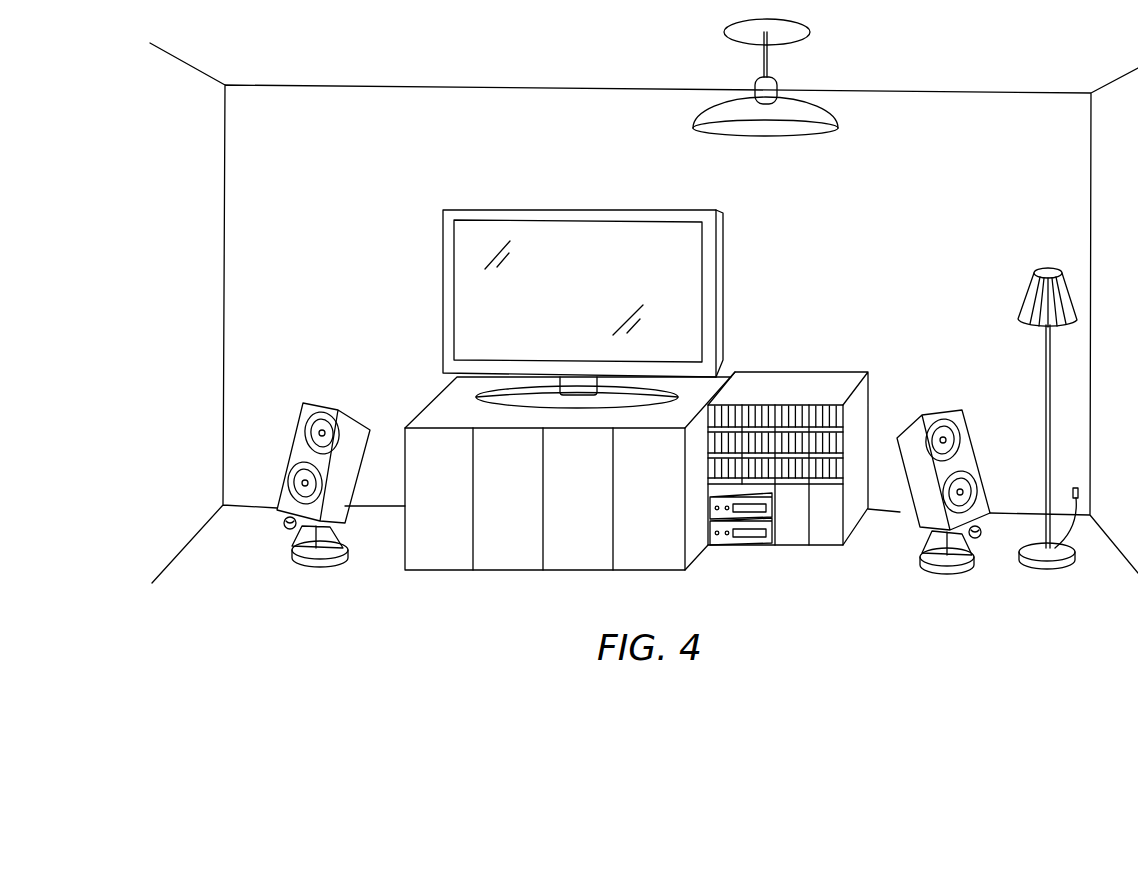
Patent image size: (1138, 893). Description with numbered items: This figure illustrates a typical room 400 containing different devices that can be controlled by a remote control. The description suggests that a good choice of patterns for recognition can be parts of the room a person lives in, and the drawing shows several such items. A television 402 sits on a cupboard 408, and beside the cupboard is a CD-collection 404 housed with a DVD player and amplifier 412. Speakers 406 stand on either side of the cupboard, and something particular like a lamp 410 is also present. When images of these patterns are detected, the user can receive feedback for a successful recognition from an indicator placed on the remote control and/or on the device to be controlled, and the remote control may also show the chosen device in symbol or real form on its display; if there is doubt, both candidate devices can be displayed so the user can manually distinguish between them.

The room 400 is at (1046, 61).
The television 402 is at (578, 210).
The CD-collection 404 is at (795, 382).
The speakers 406 is at (330, 405).
The cupboard 408 is at (523, 573).
The lamp 410 is at (1027, 300).
The DVD player and amplifier 412 is at (752, 545).